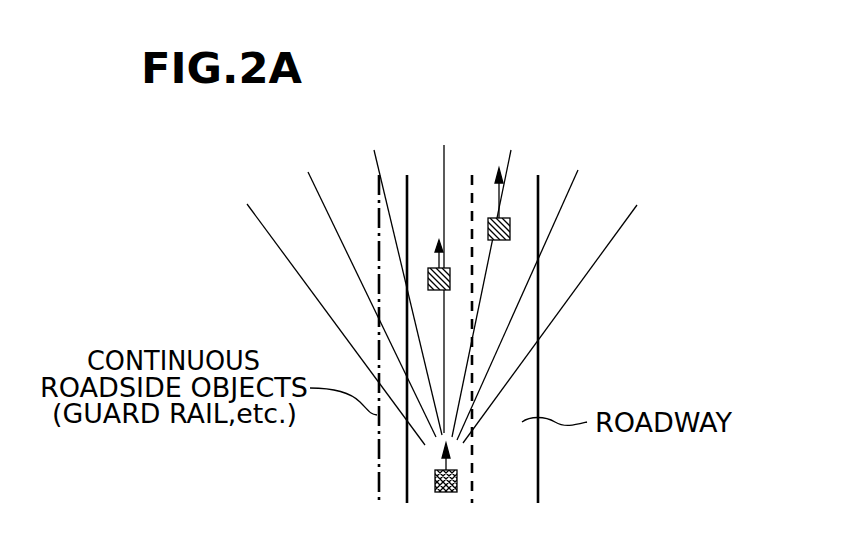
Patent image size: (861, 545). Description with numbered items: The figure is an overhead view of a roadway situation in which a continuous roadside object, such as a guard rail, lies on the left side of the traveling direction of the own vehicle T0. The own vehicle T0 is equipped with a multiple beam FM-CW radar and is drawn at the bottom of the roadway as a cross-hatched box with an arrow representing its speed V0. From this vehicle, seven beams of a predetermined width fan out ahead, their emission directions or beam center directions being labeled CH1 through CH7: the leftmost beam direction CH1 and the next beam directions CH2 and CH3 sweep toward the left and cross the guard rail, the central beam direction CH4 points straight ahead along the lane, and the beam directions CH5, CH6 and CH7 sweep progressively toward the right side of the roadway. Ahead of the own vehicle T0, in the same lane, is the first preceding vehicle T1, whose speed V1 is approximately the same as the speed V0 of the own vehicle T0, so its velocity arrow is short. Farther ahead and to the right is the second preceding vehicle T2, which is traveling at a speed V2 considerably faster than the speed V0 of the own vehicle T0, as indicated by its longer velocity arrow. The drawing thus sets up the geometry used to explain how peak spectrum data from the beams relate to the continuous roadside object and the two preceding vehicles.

The beam emission direction CH1 is at (316, 307).
The beam emission direction CH2 is at (358, 288).
The beam emission direction CH3 is at (394, 274).
The beam emission direction CH4 is at (444, 271).
The beam emission direction CH5 is at (495, 275).
The beam emission direction CH6 is at (533, 289).
The beam emission direction CH7 is at (566, 306).
The own vehicle T0 is at (435, 480).
The speed of the own vehicle V0 is at (438, 466).
The first preceding vehicle T1 is at (427, 279).
The speed of the first preceding vehicle V1 is at (434, 262).
The second preceding vehicle T2 is at (510, 228).
The speed of the second preceding vehicle V2 is at (508, 207).